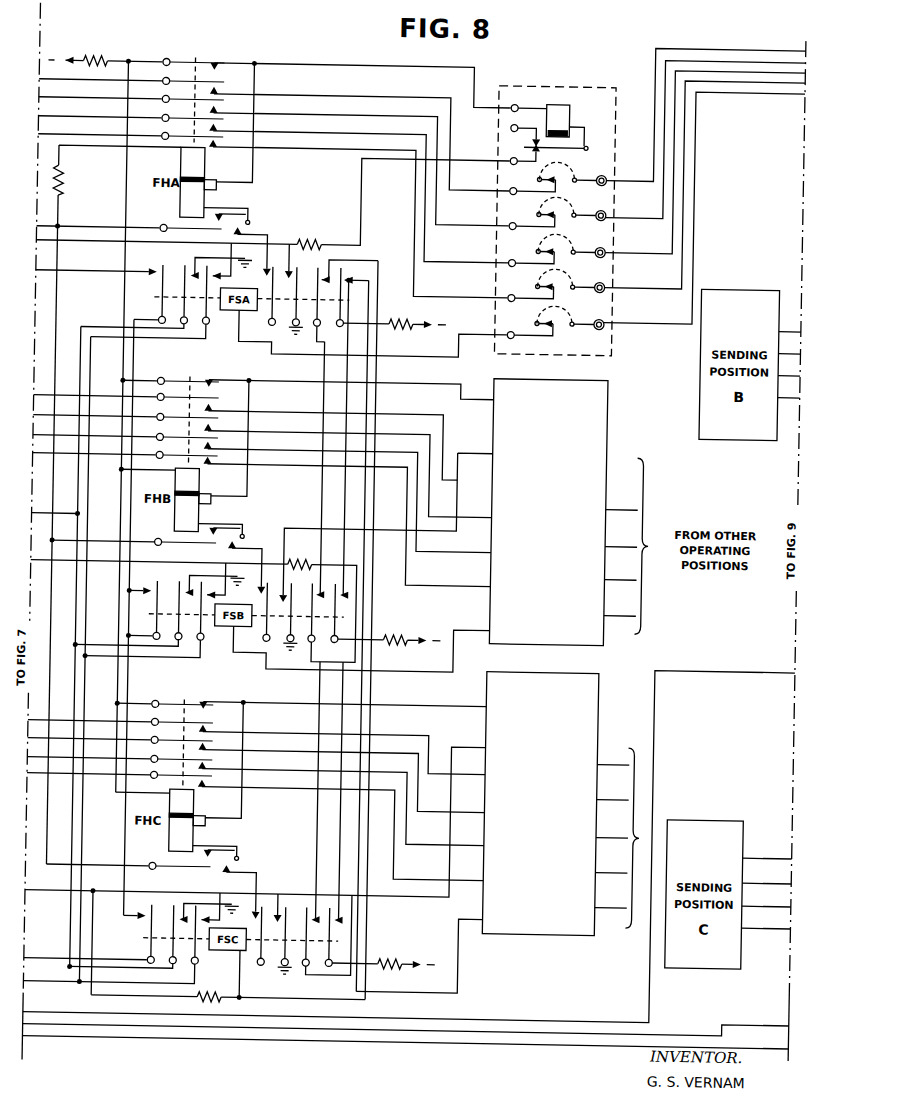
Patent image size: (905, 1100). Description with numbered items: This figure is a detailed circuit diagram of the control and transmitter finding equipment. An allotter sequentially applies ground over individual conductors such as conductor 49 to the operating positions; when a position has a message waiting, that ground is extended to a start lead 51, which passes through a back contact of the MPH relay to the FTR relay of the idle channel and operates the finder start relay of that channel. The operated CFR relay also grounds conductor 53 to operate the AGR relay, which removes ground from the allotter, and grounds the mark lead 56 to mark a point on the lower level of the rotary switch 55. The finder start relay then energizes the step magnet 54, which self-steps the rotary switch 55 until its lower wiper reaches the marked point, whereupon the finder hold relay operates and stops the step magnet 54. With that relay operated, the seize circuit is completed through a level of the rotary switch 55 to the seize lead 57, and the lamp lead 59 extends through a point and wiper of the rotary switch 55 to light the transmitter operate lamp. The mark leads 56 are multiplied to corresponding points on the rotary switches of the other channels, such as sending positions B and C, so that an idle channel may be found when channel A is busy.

The individual conductor 49 is at (246, 1044).
The start lead 51 is at (680, 667).
The conductor 53 is at (160, 1033).
The step magnet 54 is at (562, 115).
The rotary switch 55 is at (555, 206).
The mark lead 56 is at (637, 323).
The seize lead 57 is at (657, 287).
The lamp lead 59 is at (657, 252).